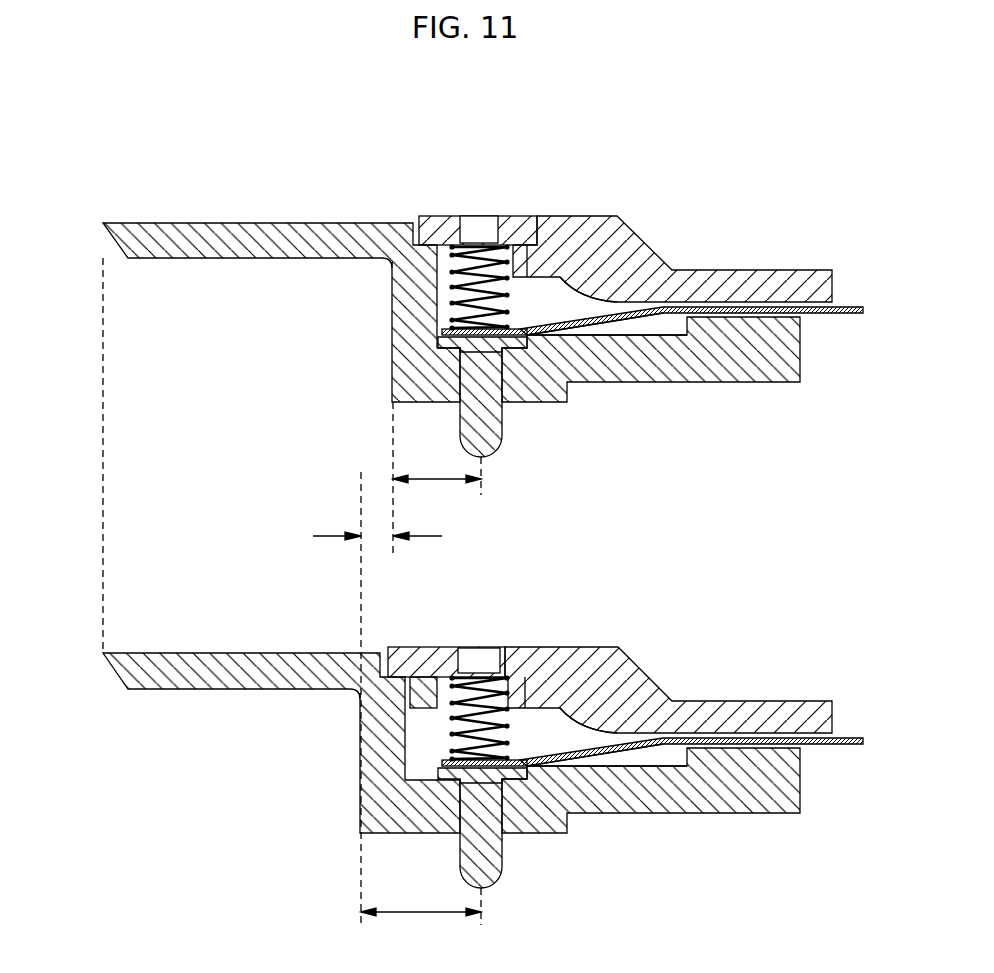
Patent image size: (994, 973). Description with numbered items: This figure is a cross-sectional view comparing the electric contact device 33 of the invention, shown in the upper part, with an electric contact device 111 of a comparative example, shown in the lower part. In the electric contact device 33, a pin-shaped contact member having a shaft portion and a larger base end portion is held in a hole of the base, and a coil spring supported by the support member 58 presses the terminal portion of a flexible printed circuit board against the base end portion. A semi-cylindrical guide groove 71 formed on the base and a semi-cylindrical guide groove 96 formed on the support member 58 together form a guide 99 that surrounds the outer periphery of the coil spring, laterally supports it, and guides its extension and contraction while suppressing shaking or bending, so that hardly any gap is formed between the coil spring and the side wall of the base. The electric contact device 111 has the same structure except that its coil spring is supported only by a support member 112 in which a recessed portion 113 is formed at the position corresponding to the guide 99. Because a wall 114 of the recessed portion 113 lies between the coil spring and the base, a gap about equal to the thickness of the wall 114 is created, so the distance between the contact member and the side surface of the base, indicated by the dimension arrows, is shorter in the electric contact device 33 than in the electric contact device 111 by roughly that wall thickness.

The electric contact device 33 is at (472, 282).
The electric contact device of comparative example 111 is at (471, 727).
The support member 58 is at (672, 230).
The guide groove 71 is at (447, 216).
The guide groove 96 is at (513, 216).
The guide 99 is at (484, 179).
The support member 112 is at (668, 660).
The recessed portion 113 is at (478, 648).
The wall 114 is at (368, 711).